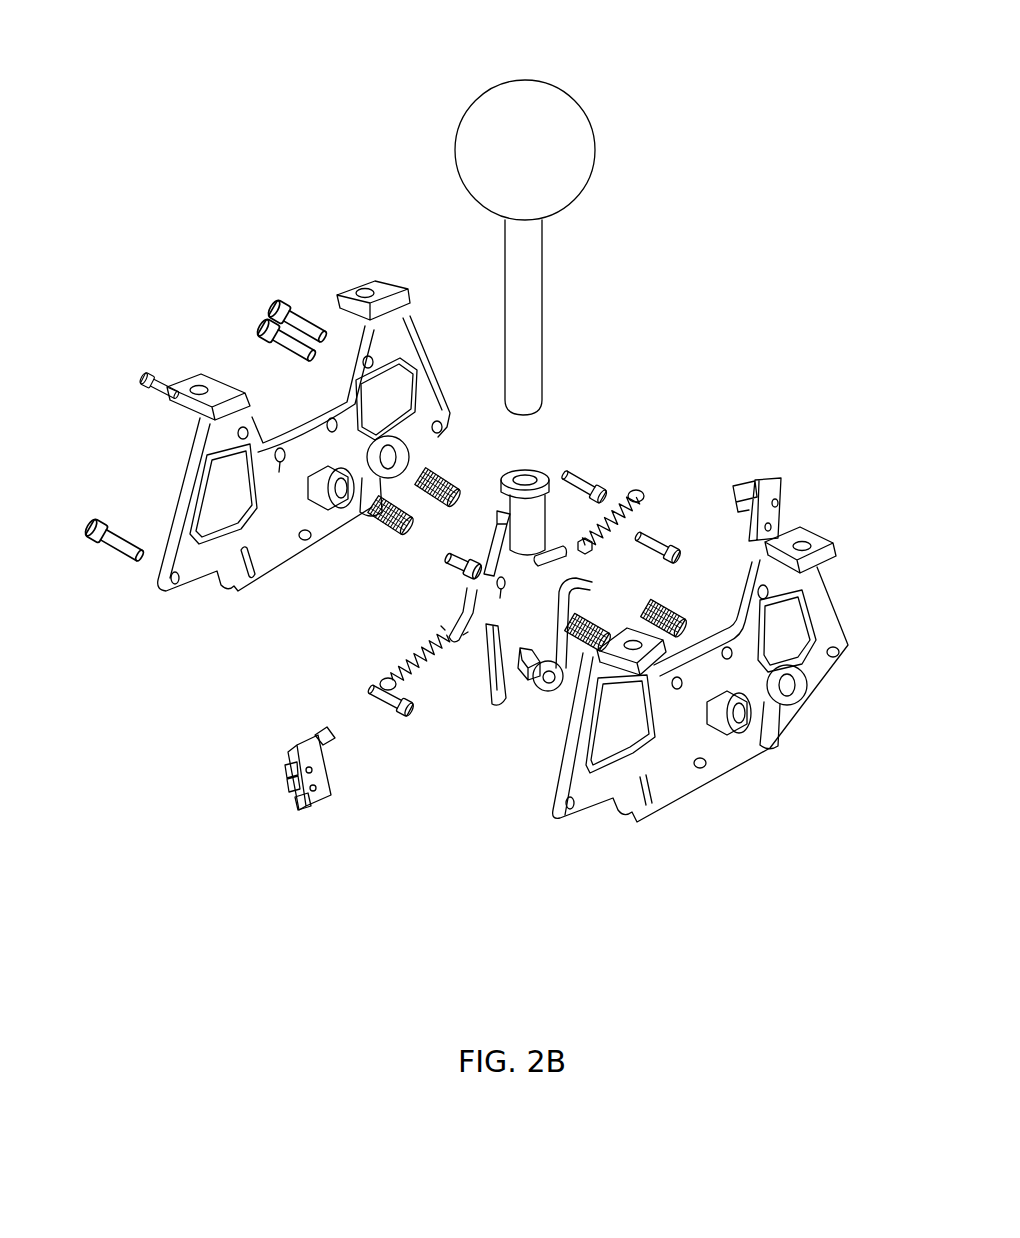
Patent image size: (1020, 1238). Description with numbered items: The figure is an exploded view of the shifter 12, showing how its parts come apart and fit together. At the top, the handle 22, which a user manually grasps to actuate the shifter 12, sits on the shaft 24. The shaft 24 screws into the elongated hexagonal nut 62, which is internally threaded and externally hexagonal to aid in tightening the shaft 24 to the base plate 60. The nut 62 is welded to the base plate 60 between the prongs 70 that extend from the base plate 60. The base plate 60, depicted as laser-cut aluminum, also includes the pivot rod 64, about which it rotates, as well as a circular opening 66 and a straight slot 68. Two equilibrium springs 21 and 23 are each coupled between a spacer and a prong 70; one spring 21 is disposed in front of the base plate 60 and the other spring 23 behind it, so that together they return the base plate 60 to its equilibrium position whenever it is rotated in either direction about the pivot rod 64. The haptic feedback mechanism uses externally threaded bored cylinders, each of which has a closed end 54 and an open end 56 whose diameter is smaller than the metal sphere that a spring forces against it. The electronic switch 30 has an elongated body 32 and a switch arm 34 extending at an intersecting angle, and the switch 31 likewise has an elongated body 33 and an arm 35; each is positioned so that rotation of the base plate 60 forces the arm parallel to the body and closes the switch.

The shifter 12 is at (246, 76).
The equilibrium spring 21 is at (420, 650).
The handle 22 is at (597, 150).
The equilibrium spring 23 is at (633, 492).
The shaft 24 is at (542, 290).
The electronic switch 30 is at (248, 763).
The switch 31 is at (767, 457).
The elongated body 32 is at (322, 800).
The elongated body 33 is at (780, 485).
The switch arm 34 is at (320, 734).
The arm 35 is at (738, 486).
The closed end 54 is at (441, 467).
The open end 56 is at (458, 582).
The base plate 60 is at (489, 676).
The elongated hexagonal nut 62 is at (536, 472).
The pivot rod 64 is at (525, 668).
The circular opening 66 is at (478, 604).
The straight slot 68 is at (532, 572).
The prong 70 is at (496, 520).